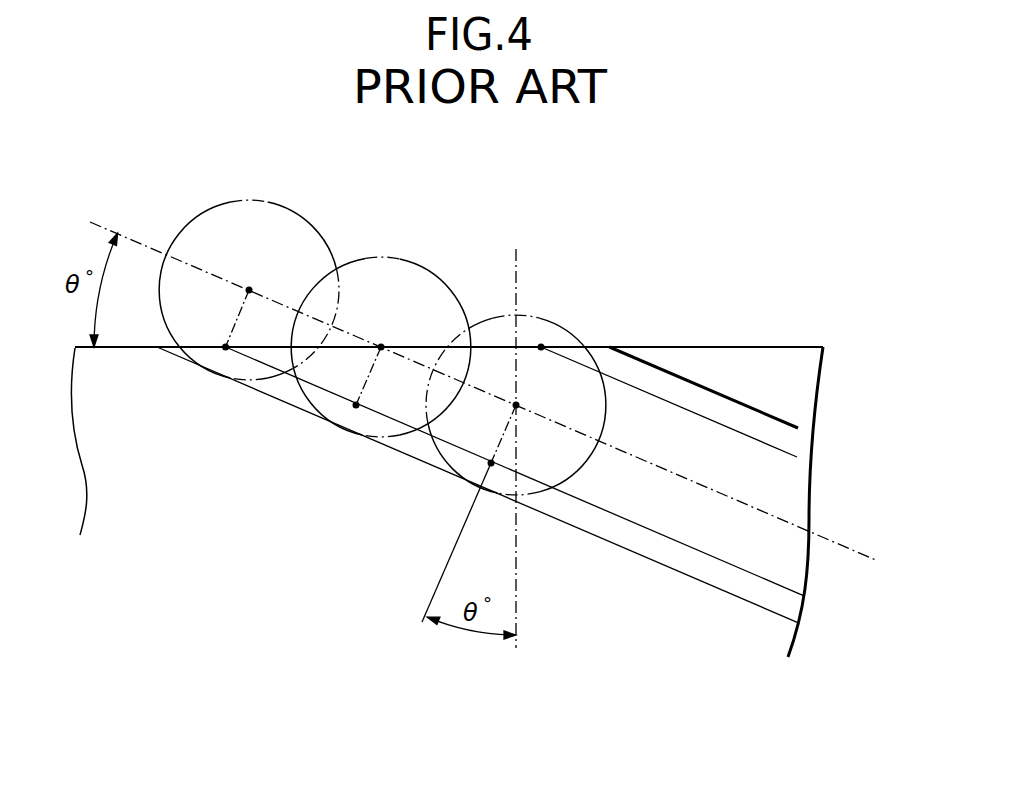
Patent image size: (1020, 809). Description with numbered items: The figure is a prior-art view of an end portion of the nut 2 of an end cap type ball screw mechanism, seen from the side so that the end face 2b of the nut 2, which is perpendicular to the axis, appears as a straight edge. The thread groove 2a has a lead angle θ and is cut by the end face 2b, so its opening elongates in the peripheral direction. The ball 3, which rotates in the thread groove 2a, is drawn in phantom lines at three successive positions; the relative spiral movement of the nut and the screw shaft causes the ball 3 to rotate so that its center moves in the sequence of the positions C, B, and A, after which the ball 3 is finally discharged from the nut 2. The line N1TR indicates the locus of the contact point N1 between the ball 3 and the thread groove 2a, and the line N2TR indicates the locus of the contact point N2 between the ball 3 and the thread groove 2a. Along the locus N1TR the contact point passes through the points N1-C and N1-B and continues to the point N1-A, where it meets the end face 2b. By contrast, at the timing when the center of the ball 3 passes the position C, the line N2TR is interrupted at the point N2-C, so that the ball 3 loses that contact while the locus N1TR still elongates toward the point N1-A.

The nut 2 is at (795, 365).
The thread groove 2a is at (798, 428).
The end face 2b is at (708, 346).
The ball 3 is at (227, 199).
The ball center position A is at (242, 304).
The ball center position B is at (373, 359).
The ball center position C is at (513, 433).
The point N1-A is at (225, 350).
The point N1-B is at (356, 408).
The point N1-C is at (491, 463).
The point N2-C is at (542, 344).
The locus of contact point N1 N1TR is at (783, 588).
The locus of contact point N2 N2TR is at (797, 453).